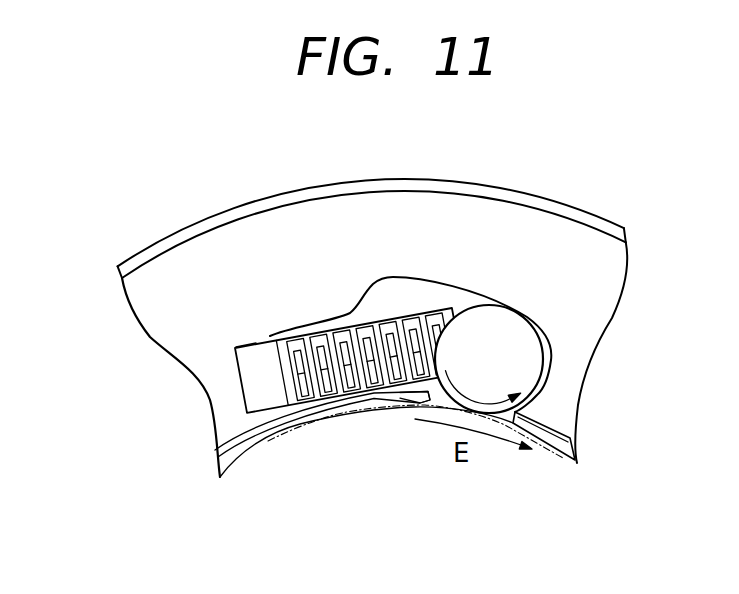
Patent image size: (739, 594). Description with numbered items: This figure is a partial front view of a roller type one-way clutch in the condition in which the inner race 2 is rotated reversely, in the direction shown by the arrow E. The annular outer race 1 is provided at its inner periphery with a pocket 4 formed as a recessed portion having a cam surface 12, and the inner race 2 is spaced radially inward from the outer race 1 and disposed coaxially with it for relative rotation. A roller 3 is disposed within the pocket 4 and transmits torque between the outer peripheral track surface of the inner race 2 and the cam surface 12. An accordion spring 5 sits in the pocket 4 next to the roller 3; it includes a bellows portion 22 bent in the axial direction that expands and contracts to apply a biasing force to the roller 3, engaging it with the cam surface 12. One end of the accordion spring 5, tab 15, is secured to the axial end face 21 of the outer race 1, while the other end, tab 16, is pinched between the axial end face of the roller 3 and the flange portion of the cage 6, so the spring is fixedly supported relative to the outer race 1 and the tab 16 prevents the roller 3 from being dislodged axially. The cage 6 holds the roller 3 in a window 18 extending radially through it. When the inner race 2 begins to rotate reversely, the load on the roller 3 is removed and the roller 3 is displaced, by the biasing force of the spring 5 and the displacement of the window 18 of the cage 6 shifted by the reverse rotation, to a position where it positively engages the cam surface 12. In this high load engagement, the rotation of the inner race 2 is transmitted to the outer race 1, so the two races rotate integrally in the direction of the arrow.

The outer race 1 is at (195, 273).
The inner race 2 is at (268, 486).
The roller 3 is at (495, 322).
The pocket 4 is at (401, 285).
The accordion spring 5 is at (297, 273).
The cage 6 is at (563, 443).
The cam surface 12 is at (520, 307).
The tab 15 is at (250, 378).
The tab 16 is at (437, 317).
The window 18 is at (410, 403).
The axial end face 21 is at (217, 350).
The bellows portion 22 is at (360, 407).